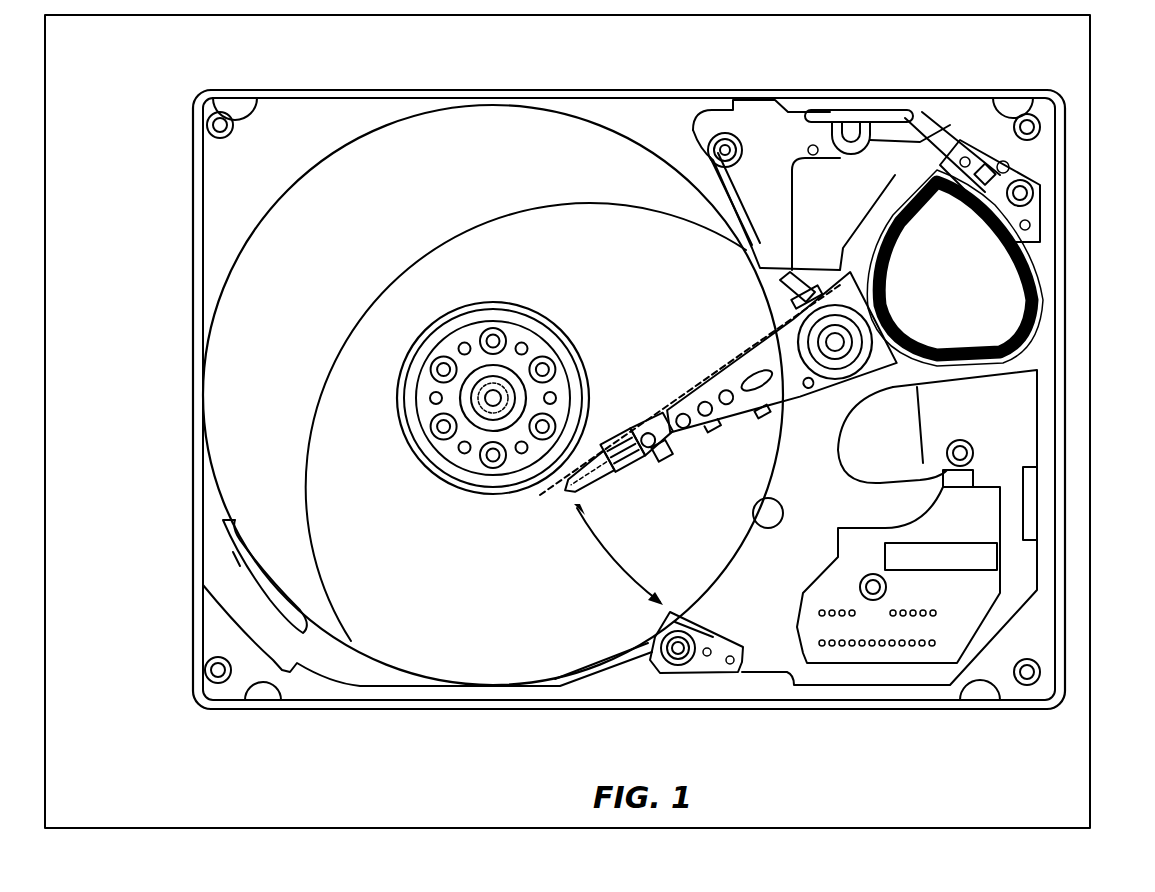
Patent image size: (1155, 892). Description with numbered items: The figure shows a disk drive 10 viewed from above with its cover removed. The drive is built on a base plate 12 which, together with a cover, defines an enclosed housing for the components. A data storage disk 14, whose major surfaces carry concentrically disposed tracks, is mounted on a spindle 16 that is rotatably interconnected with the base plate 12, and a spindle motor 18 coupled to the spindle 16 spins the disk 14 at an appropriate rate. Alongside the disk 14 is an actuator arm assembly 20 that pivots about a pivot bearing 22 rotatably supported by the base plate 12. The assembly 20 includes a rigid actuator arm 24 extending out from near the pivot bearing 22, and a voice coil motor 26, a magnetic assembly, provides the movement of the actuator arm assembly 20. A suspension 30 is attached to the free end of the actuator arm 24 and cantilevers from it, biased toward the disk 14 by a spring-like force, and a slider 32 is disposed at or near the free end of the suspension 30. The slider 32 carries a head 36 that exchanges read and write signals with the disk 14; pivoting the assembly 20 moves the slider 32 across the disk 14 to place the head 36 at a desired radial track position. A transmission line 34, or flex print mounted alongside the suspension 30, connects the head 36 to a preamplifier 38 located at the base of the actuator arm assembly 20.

The disk drive 10 is at (133, 176).
The base plate 12 is at (382, 89).
The data storage disk 14 is at (506, 135).
The spindle 16 is at (518, 305).
The spindle motor 18 is at (468, 370).
The actuator arm assembly 20 is at (743, 357).
The pivot bearing 22 is at (830, 367).
The actuator arm 24 is at (700, 440).
The voice coil motor 26 is at (955, 268).
The suspension 30 is at (595, 452).
The slider 32 is at (570, 490).
The transmission line 34 is at (697, 393).
The head 36 is at (578, 522).
The preamplifier 38 is at (806, 290).